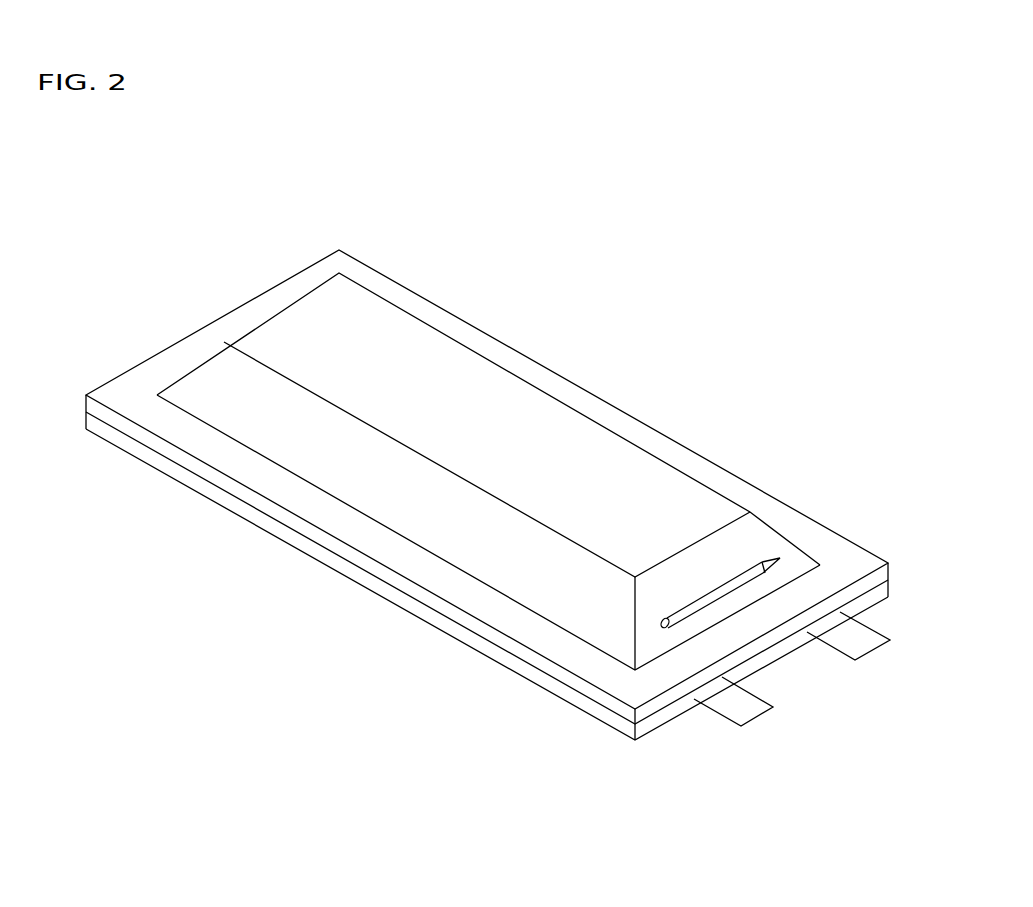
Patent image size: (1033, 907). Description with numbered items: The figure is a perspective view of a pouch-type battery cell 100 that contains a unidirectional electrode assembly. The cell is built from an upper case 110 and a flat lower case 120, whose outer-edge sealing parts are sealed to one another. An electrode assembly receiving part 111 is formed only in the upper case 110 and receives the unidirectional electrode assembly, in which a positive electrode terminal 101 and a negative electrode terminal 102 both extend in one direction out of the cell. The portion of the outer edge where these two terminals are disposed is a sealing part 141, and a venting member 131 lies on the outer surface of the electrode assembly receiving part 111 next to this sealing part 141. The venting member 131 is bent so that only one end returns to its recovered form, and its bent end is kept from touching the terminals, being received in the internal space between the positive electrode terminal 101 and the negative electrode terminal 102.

The pouch-type battery cell 100 is at (145, 201).
The upper case 110 is at (837, 532).
The electrode assembly receiving part 111 is at (628, 483).
The lower case 120 is at (528, 668).
The venting member 131 is at (722, 588).
The sealing part 141 is at (623, 682).
The positive electrode terminal 101 is at (748, 708).
The negative electrode terminal 102 is at (865, 640).